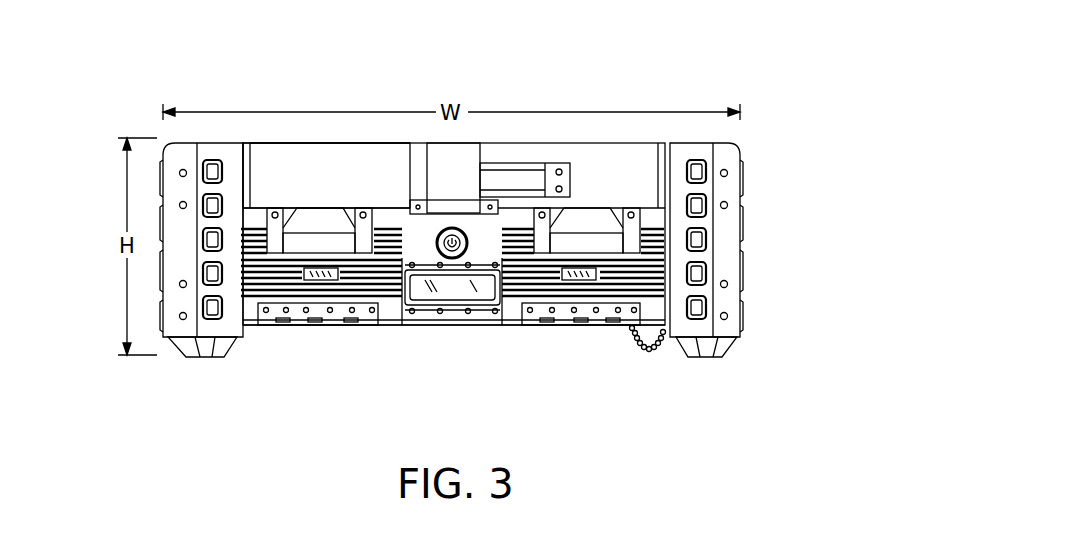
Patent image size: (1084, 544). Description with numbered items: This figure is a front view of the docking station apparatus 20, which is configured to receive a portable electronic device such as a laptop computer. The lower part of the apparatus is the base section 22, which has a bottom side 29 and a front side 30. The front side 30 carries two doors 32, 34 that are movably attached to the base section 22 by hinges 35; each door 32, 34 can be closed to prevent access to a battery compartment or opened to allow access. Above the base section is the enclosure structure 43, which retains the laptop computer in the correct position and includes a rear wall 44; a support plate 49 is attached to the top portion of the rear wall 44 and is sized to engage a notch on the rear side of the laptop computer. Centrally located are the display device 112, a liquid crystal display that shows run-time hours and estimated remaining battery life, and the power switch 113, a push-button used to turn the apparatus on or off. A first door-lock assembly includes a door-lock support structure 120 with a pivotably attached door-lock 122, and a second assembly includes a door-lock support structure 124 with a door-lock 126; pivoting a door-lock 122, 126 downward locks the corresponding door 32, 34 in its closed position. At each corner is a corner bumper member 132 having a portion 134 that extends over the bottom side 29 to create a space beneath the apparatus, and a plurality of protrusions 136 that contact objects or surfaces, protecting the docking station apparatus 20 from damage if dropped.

The docking station apparatus 20 is at (318, 441).
The base section 22 is at (458, 327).
The bottom side 29 is at (500, 327).
The front side 30 is at (418, 326).
The door 32 is at (308, 282).
The door 34 is at (648, 350).
The hinges 35 is at (317, 326).
The enclosure structure 43 is at (275, 143).
The rear wall 44 is at (336, 143).
The support plate 49 is at (500, 143).
The display device 112 is at (447, 288).
The power switch 113 is at (440, 238).
The door-lock support structure 120 is at (303, 215).
The door-lock 122 is at (322, 262).
The door-lock support structure 124 is at (585, 212).
The door-lock 126 is at (580, 264).
The corner bumper members 132 is at (167, 168).
The portion 134 is at (240, 337).
The protrusions 136 is at (162, 272).